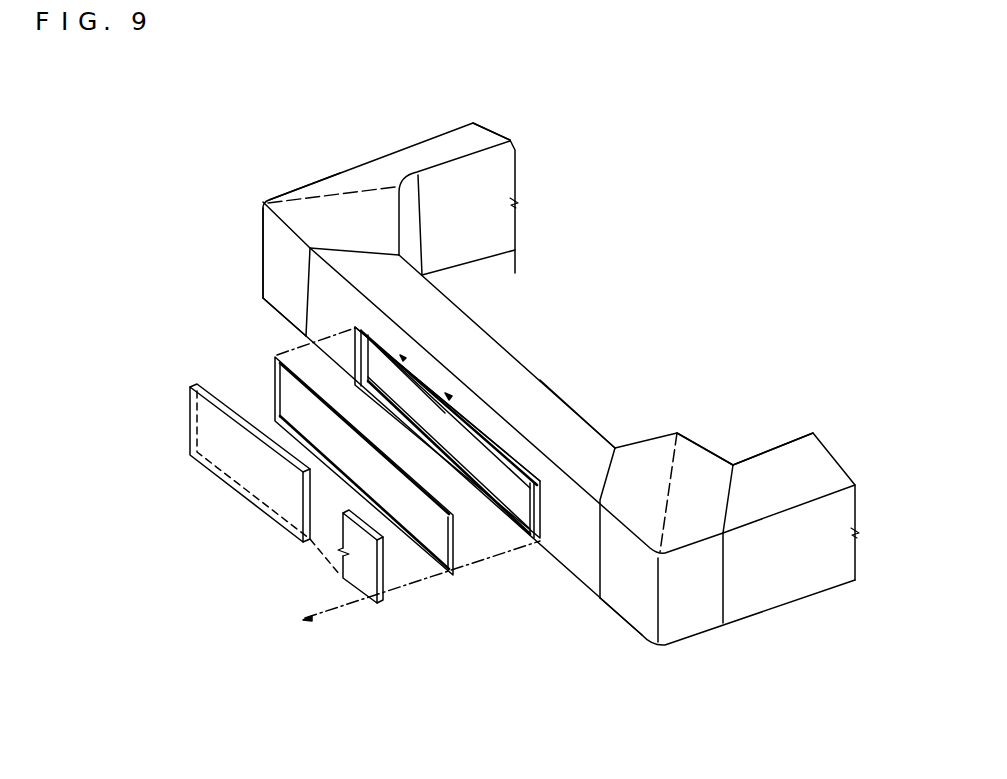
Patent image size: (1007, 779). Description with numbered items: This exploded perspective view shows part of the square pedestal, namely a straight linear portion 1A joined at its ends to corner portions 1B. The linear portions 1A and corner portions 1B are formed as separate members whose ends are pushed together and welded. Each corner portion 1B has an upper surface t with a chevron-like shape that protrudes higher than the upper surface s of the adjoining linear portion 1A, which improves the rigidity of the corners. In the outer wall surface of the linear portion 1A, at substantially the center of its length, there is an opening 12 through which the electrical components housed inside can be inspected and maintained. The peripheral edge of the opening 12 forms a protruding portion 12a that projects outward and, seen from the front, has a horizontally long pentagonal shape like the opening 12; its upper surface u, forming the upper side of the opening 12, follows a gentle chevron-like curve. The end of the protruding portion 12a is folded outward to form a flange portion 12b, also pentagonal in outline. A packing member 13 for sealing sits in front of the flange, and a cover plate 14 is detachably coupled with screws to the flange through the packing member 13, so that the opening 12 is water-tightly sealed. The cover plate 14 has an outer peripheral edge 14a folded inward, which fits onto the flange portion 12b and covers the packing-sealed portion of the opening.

The linear portion 1A is at (407, 141).
The corner portion 1B is at (259, 250).
The opening 12 is at (513, 490).
The protruding portion 12a is at (435, 377).
The flange portion 12b is at (400, 343).
The packing member 13 is at (272, 388).
The cover plate 14 is at (240, 471).
The outer peripheral edge 14a is at (377, 570).
The upper surface of the linear portion s is at (474, 138).
The upper surface of the corner portion t is at (331, 181).
The upper surface of the protruding portion u is at (522, 440).